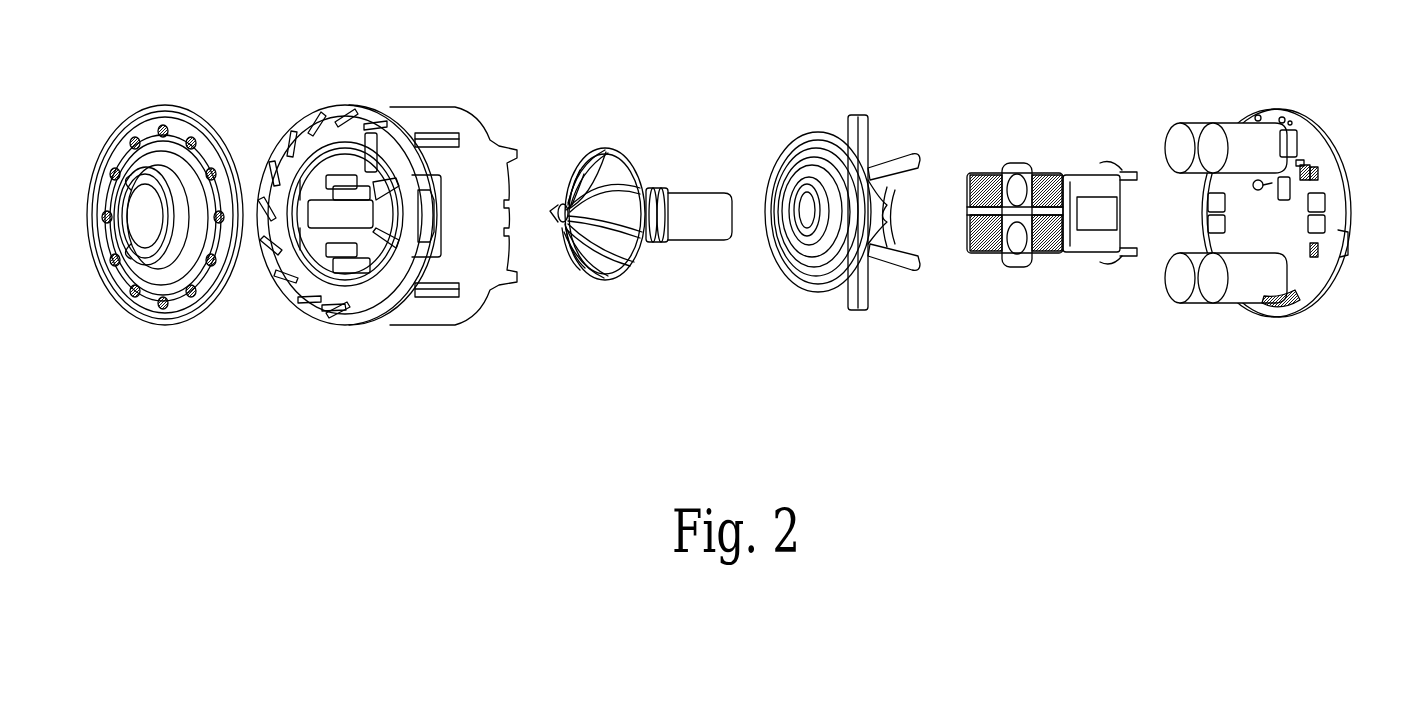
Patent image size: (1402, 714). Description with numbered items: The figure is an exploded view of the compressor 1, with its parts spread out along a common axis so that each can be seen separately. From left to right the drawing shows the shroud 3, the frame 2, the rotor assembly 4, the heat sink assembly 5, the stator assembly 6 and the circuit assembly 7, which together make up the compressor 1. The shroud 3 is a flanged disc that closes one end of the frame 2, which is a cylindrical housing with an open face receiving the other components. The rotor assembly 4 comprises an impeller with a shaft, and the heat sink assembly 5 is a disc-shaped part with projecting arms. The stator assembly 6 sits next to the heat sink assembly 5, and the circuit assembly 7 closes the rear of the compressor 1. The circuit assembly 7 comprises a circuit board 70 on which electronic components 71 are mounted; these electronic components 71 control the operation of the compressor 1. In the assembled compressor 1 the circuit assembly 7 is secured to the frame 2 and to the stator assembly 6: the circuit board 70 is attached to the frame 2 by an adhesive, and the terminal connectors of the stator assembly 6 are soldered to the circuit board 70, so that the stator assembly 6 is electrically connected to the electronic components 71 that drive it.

The compressor 1 is at (1063, 43).
The frame 2 is at (399, 327).
The shroud 3 is at (158, 325).
The rotor assembly 4 is at (612, 283).
The heat sink assembly 5 is at (820, 293).
The stator assembly 6 is at (1032, 262).
The circuit assembly 7 is at (1281, 237).
The circuit board 70 is at (1297, 117).
The electronic components 71 is at (1322, 197).